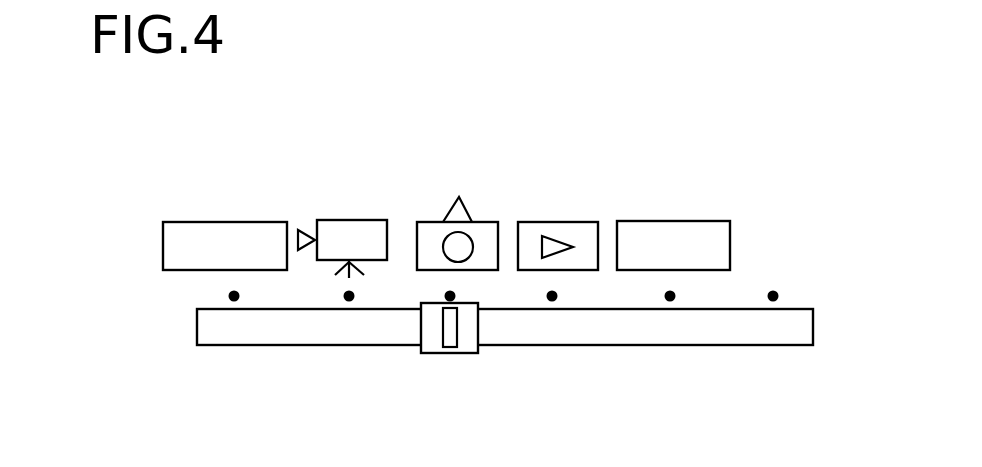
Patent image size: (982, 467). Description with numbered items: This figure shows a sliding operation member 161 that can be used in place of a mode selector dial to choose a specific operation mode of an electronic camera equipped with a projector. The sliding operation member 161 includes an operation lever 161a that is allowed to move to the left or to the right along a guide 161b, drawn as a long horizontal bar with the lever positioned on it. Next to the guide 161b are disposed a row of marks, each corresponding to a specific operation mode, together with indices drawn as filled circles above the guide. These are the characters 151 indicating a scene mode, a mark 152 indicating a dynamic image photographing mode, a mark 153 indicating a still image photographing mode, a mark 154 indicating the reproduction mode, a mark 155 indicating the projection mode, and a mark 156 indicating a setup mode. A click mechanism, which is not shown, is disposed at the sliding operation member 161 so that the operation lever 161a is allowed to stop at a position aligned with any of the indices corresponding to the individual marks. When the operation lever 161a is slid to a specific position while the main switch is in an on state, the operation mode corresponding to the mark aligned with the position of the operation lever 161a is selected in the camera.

The characters indicating a scene mode 151 is at (214, 221).
The mark indicating a dynamic image photographing mode 152 is at (353, 219).
The mark indicating a still image photographing mode 153 is at (467, 190).
The mark indicating the reproduction mode 154 is at (559, 221).
The mark indicating the projection mode 155 is at (674, 220).
The mark indicating a setup mode 156 is at (793, 222).
The sliding operation member 161 is at (417, 368).
The operation lever 161a is at (449, 362).
The guide 161b is at (755, 346).